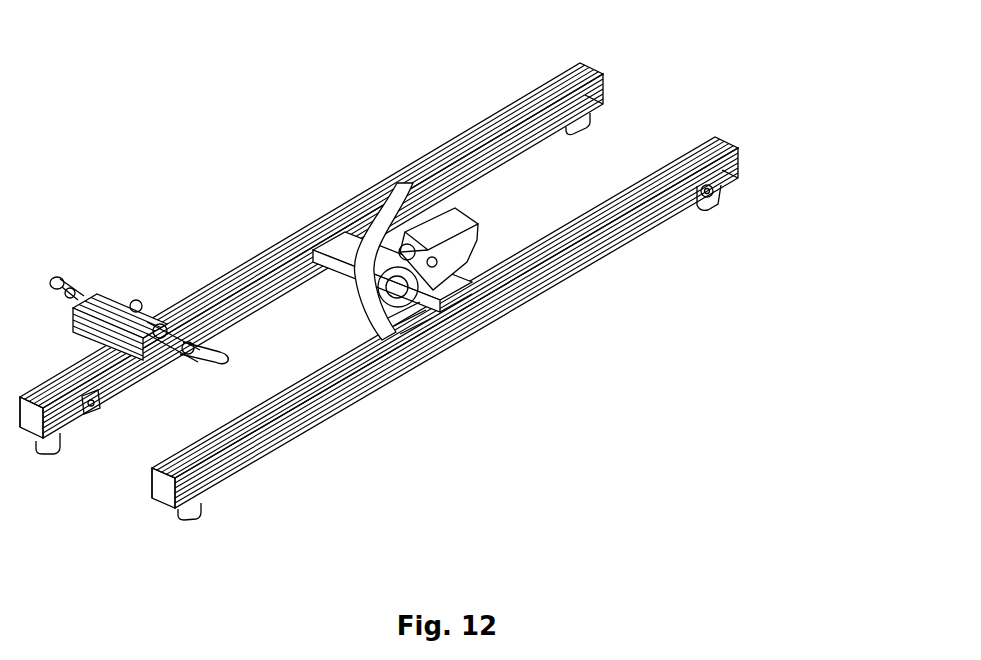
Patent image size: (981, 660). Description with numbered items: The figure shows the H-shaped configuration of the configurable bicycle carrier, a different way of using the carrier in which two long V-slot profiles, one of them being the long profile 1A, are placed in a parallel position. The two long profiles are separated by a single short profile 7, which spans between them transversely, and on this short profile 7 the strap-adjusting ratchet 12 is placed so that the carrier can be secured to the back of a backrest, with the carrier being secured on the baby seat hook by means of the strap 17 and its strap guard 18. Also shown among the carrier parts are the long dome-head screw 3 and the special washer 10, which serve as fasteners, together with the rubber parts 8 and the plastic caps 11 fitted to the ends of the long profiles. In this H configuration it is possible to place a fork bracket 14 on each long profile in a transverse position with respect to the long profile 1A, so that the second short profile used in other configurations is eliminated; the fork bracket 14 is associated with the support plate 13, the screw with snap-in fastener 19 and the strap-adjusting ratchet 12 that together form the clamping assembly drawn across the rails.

The long profile 1A is at (608, 82).
The strap guard 18 is at (742, 157).
The rubber part 8 is at (55, 448).
The long dome-head screw 3 is at (716, 188).
The plastic cap 11 is at (27, 410).
The special washer 10 is at (97, 417).
The short profile 7 is at (352, 308).
The strap-adjusting ratchet 12 is at (446, 212).
The strap 17 is at (394, 208).
The fork bracket 14 is at (110, 292).
The screw with snap-in fastener 19 is at (54, 273).
The support plate 13 is at (144, 296).